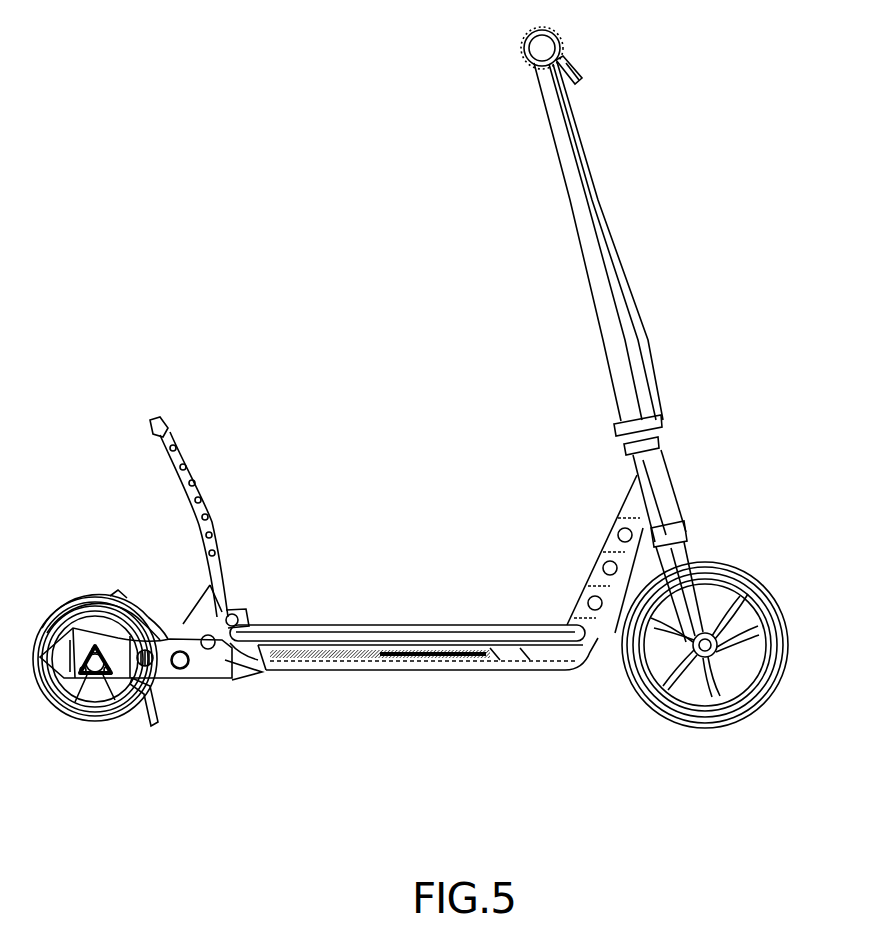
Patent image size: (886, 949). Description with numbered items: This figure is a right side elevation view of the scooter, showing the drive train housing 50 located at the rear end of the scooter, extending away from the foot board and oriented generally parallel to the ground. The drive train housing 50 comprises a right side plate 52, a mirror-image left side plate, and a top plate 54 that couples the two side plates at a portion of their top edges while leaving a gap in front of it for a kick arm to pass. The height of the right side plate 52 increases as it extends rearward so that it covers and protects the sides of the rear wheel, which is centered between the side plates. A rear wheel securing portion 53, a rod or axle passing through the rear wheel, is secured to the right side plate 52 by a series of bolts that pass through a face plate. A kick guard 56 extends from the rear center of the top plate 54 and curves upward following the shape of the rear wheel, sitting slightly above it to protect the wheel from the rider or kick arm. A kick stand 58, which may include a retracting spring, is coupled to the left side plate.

The drive train housing 50 is at (202, 672).
The right side plate 52 is at (183, 673).
The rear wheel securing portion 53 is at (88, 647).
The top plate 54 is at (166, 628).
The kick guard 56 is at (124, 606).
The kick stand 58 is at (152, 724).